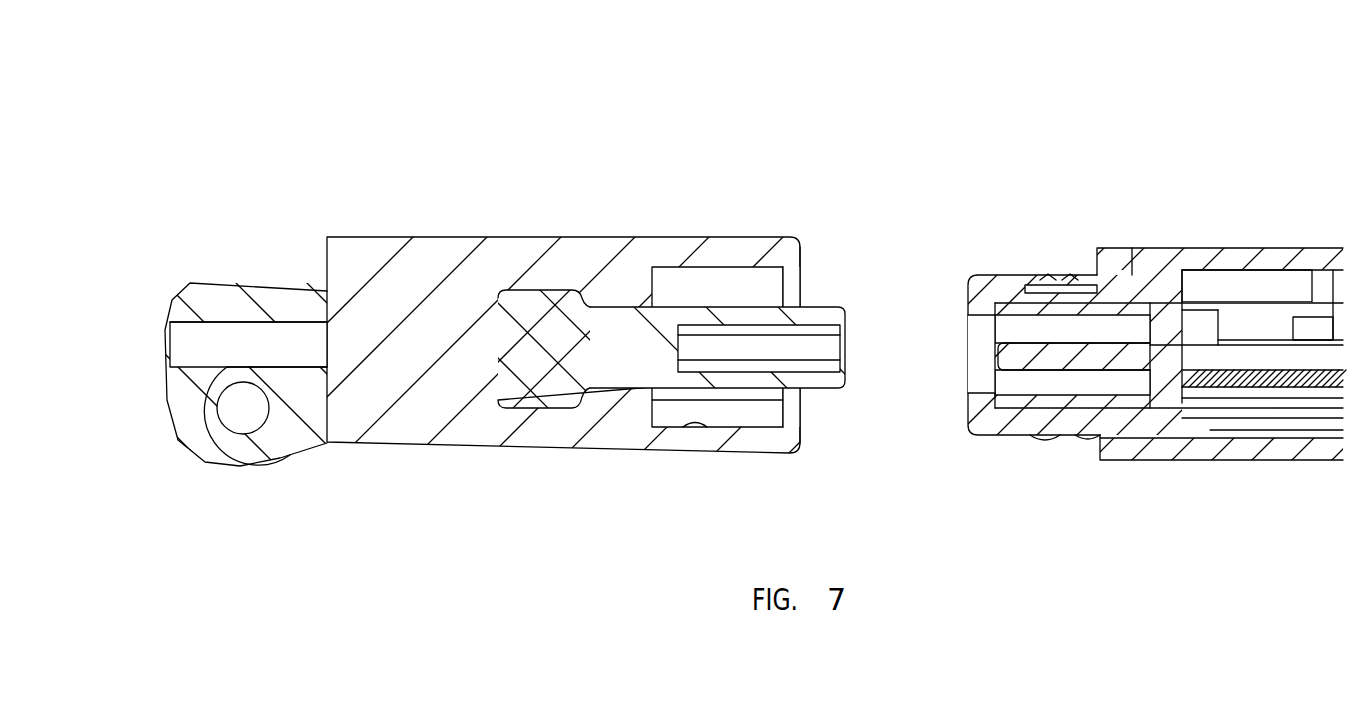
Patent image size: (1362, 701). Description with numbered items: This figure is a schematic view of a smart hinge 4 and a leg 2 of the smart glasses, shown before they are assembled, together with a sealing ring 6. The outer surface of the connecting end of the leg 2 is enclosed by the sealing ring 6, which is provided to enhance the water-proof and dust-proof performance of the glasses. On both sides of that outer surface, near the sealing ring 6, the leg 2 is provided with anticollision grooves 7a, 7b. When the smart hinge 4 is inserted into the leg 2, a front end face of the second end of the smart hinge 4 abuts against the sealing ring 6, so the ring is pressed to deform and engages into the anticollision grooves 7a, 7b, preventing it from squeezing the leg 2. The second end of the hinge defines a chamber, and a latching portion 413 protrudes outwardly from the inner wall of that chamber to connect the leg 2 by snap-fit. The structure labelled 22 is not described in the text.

The smart hinge 4 is at (415, 237).
The latching portion 413 is at (695, 272).
The shell 22 is at (1005, 278).
The anticollision groove 7a is at (1053, 277).
The sealing ring 6 is at (1060, 277).
The anticollision groove 7b is at (1072, 277).
The leg 2 is at (1223, 243).